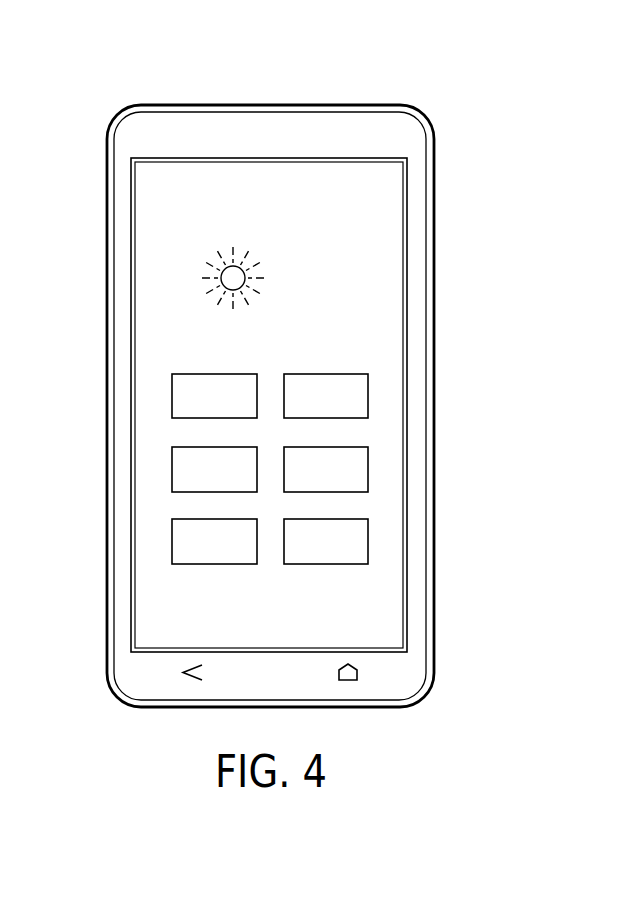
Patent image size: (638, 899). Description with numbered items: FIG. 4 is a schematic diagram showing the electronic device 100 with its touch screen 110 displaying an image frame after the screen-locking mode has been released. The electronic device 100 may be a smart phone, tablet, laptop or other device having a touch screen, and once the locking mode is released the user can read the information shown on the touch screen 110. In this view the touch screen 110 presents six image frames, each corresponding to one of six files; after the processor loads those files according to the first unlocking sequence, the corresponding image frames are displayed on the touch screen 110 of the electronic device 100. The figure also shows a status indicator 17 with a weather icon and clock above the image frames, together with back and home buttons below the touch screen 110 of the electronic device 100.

The electronic device 100 is at (105, 88).
The touch screen 110 is at (383, 233).
The time and weather indicator 17 is at (271, 278).